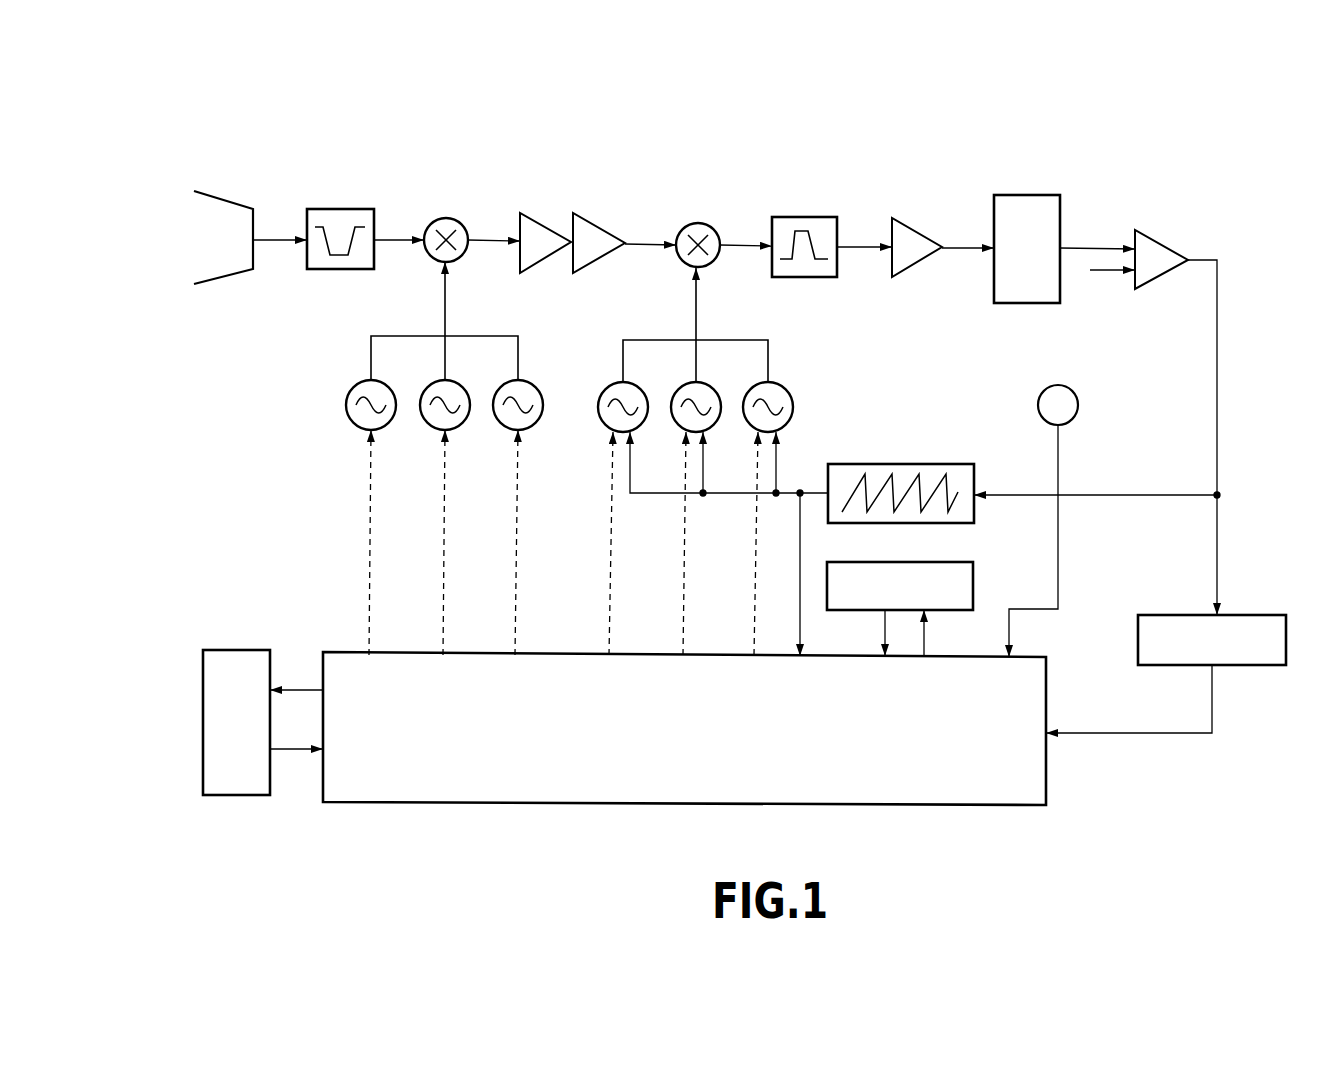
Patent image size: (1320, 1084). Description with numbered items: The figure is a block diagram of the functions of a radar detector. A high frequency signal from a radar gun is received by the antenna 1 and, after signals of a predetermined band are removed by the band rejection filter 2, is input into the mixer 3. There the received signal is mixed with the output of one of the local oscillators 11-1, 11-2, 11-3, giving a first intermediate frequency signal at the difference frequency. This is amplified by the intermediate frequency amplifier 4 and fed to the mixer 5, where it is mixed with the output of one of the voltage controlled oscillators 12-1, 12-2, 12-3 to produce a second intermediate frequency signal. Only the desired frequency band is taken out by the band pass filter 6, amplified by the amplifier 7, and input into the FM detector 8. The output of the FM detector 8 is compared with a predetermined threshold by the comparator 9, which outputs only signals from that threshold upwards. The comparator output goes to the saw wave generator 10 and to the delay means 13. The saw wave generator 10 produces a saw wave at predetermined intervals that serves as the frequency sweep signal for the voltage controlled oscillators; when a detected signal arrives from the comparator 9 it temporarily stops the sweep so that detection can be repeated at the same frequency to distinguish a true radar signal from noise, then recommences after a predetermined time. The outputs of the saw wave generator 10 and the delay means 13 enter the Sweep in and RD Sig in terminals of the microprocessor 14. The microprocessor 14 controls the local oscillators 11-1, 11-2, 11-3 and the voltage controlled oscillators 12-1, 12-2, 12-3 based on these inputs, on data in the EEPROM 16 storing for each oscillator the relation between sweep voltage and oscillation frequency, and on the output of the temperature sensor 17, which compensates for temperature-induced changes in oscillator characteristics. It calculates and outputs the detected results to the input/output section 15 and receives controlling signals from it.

The antenna 1 is at (231, 199).
The band rejection filter 2 is at (346, 209).
The mixer 3 is at (452, 218).
The intermediate frequency amplifier 4 is at (538, 222).
The mixer 5 is at (702, 223).
The band pass filter 6 is at (808, 217).
The amplifier 7 is at (905, 228).
The FM detector 8 is at (1040, 195).
The comparator 9 is at (1165, 240).
The saw wave generator 10 is at (925, 464).
The local oscillator 11-1 is at (350, 388).
The local oscillator 11-2 is at (425, 388).
The local oscillator 11-3 is at (500, 388).
The voltage controlled oscillator 12-1 is at (603, 390).
The voltage controlled oscillator 12-2 is at (678, 390).
The voltage controlled oscillator 12-3 is at (752, 390).
The delay means 13 is at (1166, 614).
The microprocessor 14 is at (884, 806).
The input/output section 15 is at (240, 797).
The EEPROM 16 is at (975, 568).
The temperature sensor 17 is at (1040, 392).